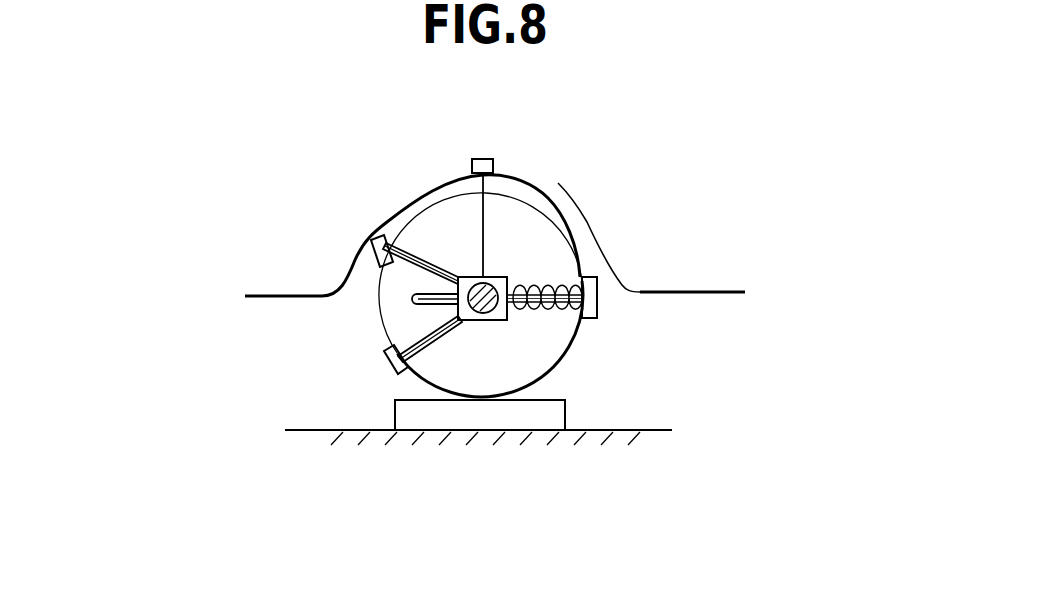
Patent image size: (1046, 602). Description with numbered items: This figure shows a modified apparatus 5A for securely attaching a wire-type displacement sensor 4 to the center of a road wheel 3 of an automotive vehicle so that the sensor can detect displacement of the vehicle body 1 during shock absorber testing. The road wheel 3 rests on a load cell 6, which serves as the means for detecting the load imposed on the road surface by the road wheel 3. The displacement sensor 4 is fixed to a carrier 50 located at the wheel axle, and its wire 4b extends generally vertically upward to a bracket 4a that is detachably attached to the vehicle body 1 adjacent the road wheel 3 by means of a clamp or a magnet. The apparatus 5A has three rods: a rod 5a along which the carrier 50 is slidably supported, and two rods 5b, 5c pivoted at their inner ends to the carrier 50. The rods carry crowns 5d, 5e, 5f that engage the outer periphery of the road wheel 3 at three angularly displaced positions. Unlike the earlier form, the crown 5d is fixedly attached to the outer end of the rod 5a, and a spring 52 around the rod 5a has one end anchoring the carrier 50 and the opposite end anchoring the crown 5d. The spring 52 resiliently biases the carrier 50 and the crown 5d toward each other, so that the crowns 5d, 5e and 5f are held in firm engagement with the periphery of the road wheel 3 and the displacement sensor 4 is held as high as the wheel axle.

The vehicle body 1 is at (709, 278).
The road wheel 3 is at (380, 318).
The displacement sensor 4 is at (506, 322).
The bracket 4a is at (493, 159).
The wire 4b is at (481, 232).
The modified apparatus 5A is at (544, 264).
The rod 5a is at (410, 294).
The rod 5b is at (441, 331).
The rod 5c is at (418, 257).
The crown 5d is at (597, 297).
The crown 5e is at (393, 365).
The crown 5f is at (373, 249).
The carrier 50 is at (498, 278).
The spring 52 is at (570, 314).
The load cell 6 is at (566, 414).